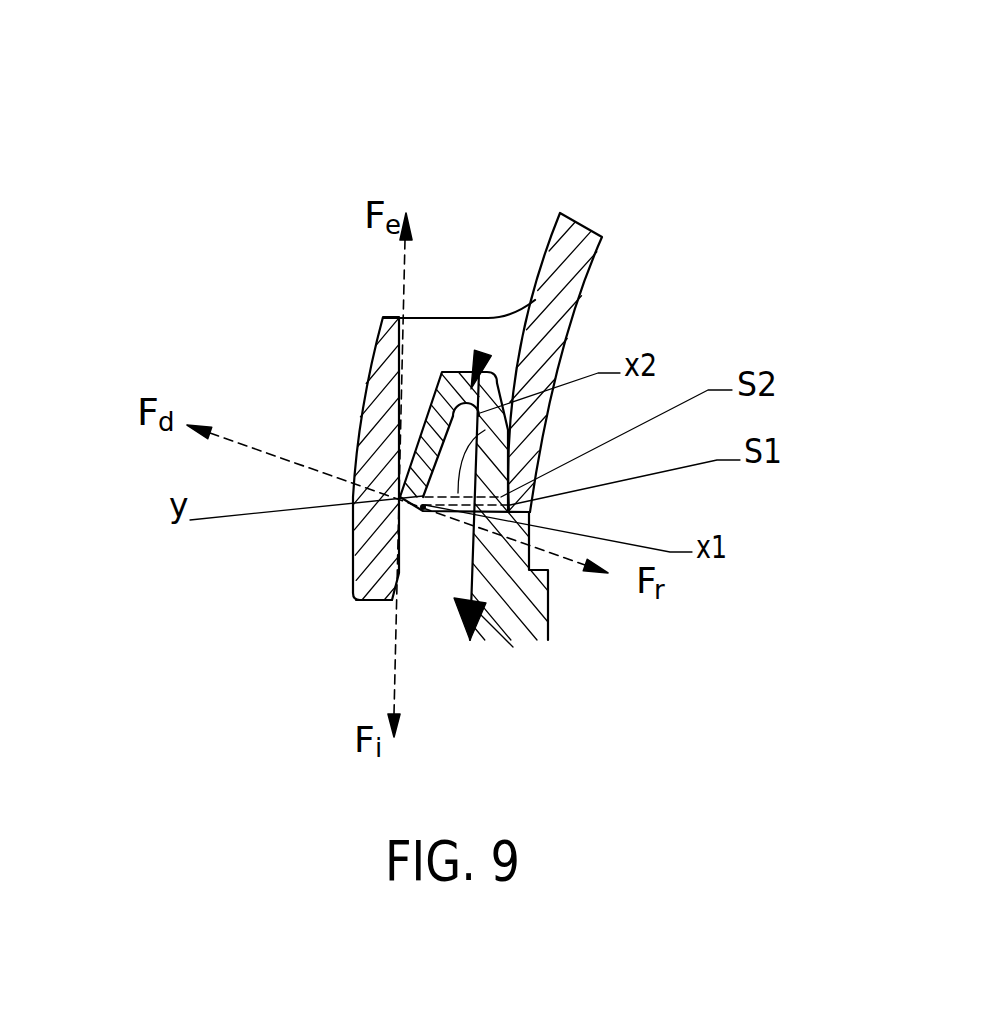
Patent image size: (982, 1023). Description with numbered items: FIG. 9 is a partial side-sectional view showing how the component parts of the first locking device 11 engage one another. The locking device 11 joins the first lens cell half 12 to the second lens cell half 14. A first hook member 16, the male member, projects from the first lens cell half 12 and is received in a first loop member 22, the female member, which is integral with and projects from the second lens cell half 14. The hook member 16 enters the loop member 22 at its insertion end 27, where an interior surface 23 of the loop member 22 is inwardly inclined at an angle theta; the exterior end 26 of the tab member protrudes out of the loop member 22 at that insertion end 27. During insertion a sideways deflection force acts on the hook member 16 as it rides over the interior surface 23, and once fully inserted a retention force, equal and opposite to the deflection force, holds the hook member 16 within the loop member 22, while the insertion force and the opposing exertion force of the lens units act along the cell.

The first locking device 11 is at (160, 243).
The first lens cell half 12 is at (595, 529).
The second lens cell half 14 is at (660, 362).
The first hook member 16 is at (562, 200).
The first loop member 22 is at (337, 454).
The interior surface 23 is at (472, 569).
The exterior end 26 is at (288, 671).
The insertion end 27 is at (578, 692).